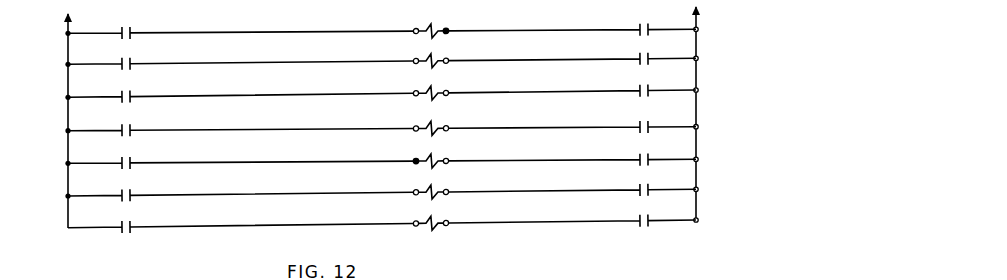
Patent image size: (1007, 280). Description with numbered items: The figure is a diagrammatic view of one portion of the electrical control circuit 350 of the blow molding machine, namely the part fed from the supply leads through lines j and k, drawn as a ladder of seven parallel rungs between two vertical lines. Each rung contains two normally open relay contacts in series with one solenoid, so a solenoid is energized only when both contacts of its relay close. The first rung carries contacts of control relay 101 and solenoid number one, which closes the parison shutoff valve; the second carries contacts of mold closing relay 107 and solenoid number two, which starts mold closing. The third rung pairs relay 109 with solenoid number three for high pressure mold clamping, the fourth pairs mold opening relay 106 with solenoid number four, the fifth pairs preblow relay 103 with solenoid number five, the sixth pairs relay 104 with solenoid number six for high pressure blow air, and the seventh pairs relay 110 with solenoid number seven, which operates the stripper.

The control circuit 350 is at (33, 98).
The control relay 101CR 101 is at (382, 23).
The mold closing relay 107CR 107 is at (382, 54).
The relay 109CR 109 is at (382, 86).
The mold opening relay 106CR 106 is at (382, 122).
The preblow relay 103CR 103 is at (382, 154).
The relay 104CR 104 is at (382, 186).
The relay 110CR 110 is at (382, 217).